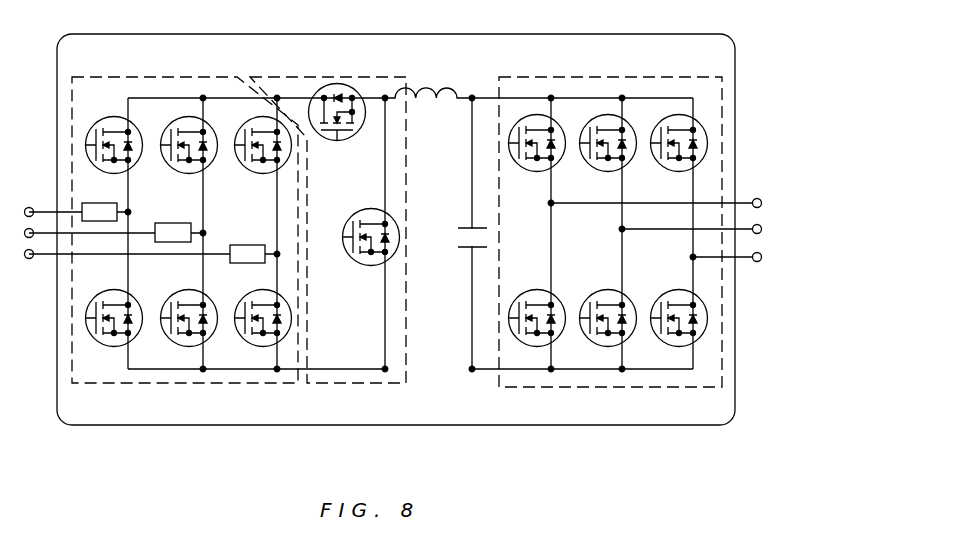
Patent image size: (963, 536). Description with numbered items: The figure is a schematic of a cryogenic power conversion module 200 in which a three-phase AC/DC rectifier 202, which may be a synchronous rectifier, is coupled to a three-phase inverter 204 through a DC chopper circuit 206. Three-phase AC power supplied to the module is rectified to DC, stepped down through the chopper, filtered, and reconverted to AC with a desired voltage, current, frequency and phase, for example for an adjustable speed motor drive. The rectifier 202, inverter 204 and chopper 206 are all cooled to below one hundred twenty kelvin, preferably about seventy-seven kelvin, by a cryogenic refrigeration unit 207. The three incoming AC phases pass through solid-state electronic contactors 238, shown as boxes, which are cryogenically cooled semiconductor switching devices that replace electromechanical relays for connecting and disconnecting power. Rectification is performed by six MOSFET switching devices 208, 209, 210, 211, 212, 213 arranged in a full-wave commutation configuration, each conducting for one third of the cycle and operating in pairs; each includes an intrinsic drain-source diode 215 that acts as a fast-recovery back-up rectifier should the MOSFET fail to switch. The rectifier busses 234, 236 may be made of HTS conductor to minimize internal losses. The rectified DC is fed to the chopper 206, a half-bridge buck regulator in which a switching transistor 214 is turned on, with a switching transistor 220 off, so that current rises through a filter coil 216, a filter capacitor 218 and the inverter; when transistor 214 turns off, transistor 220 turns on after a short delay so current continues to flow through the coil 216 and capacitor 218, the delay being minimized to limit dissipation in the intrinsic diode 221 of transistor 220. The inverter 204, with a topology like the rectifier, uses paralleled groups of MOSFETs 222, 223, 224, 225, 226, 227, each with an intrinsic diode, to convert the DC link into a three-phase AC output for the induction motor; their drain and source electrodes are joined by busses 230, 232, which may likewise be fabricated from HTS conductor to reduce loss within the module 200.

The cryogenic power conversion module 200 is at (756, 36).
The three-phase AC/DC rectifier 202 is at (102, 84).
The three-phase inverter 204 is at (715, 98).
The DC chopper circuit 206 is at (374, 389).
The cryogenic refrigeration unit 207 is at (726, 396).
The MOSFET switching device 208 is at (108, 120).
The MOSFET switching device 209 is at (168, 158).
The MOSFET switching device 210 is at (260, 172).
The MOSFET switching device 211 is at (106, 345).
The MOSFET switching device 212 is at (167, 302).
The MOSFET switching device 213 is at (241, 336).
The switching transistor 214 is at (339, 141).
The drain-source diode 215 is at (130, 143).
The filter coil 216 is at (446, 92).
The filter capacitor 218 is at (466, 250).
The switching transistor 220 is at (365, 263).
The intrinsic diode 221 is at (386, 236).
The MOSFET 222 is at (530, 170).
The MOSFET 223 is at (590, 156).
The MOSFET 224 is at (662, 156).
The MOSFET 225 is at (538, 300).
The MOSFET 226 is at (608, 300).
The MOSFET 227 is at (676, 300).
The bus 230 is at (582, 97).
The bus 232 is at (598, 372).
The bus 234 is at (173, 97).
The bus 236 is at (244, 371).
The solid-state electronic contactor 238 is at (80, 203).